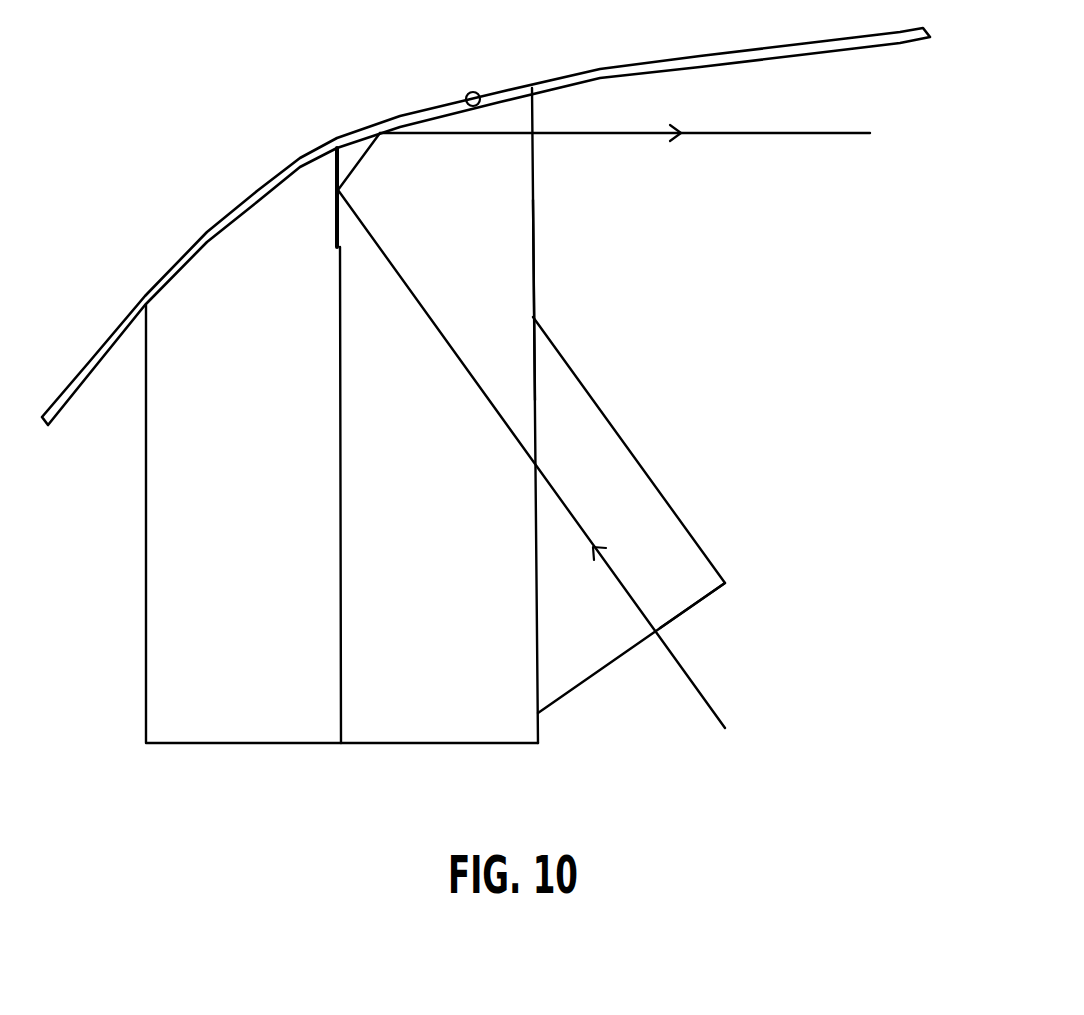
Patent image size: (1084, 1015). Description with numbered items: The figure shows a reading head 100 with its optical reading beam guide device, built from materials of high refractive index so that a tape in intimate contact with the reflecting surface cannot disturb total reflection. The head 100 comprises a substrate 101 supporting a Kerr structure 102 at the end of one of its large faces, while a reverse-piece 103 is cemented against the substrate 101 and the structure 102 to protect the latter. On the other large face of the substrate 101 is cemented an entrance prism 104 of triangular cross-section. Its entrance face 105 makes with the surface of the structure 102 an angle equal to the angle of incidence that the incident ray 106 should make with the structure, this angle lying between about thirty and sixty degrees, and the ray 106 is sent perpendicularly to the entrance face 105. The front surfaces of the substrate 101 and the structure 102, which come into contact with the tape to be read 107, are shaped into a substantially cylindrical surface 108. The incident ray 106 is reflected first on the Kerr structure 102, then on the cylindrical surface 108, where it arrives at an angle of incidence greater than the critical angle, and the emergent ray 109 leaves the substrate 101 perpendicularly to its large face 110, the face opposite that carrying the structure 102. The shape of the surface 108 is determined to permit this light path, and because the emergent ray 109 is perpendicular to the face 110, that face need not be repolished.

The head 100 is at (665, 305).
The substrate 101 is at (508, 228).
The Kerr structure 102 is at (333, 222).
The reverse-piece 103 is at (162, 480).
The entrance prism 104 is at (682, 571).
The entrance face 105 is at (690, 613).
The incident ray 106 is at (695, 692).
The tape to be read 107 is at (602, 67).
The cylindrical surface 108 is at (478, 93).
The emergent ray 109 is at (753, 134).
The large face 110 is at (533, 288).